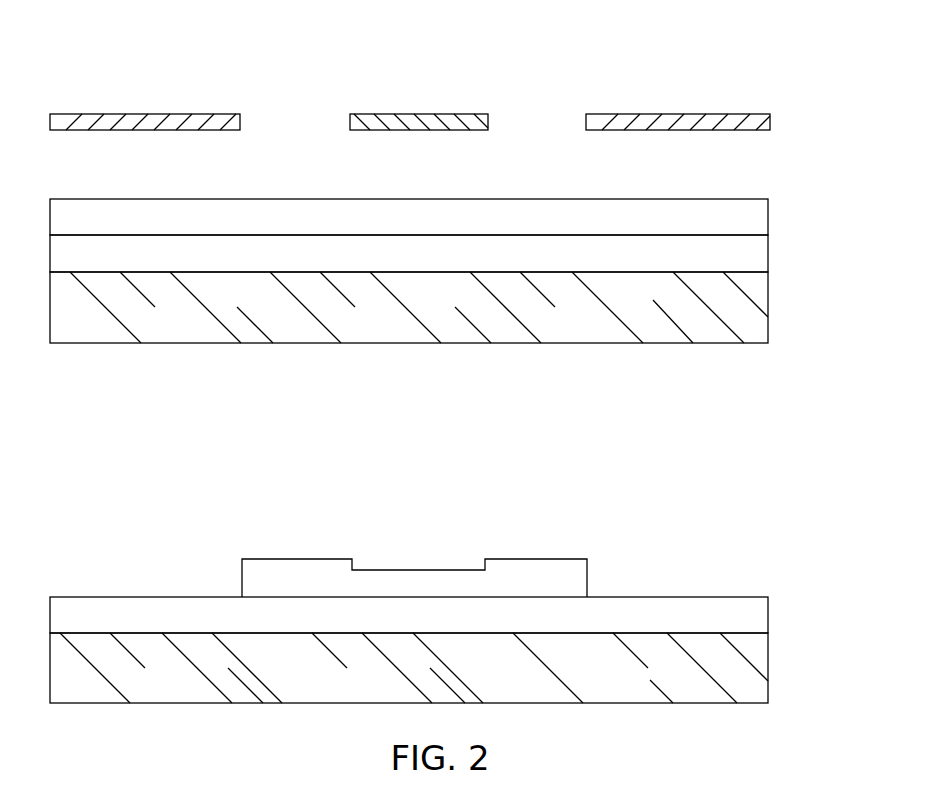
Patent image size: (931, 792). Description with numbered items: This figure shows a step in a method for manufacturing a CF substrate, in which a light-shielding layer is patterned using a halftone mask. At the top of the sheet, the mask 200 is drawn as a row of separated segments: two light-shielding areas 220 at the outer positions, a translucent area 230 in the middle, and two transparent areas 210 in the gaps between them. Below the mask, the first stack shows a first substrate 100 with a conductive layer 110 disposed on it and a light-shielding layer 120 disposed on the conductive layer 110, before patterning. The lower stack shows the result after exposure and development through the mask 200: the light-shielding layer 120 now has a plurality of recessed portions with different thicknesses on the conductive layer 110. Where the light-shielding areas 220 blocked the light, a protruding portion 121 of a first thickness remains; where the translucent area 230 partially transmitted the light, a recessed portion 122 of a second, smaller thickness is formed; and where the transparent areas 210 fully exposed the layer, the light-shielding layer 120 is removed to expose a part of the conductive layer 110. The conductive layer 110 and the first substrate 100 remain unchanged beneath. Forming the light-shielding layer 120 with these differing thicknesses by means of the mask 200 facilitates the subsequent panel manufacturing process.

The first substrate 100 is at (718, 312).
The conductive layer 110 is at (725, 258).
The light-shielding layer 120 is at (718, 222).
The protruding portion 121 is at (285, 572).
The recessed portion 122 is at (403, 578).
The mask 200 is at (766, 126).
The transparent area 210 is at (288, 123).
The light-shielding area 220 is at (142, 127).
The translucent area 230 is at (403, 118).